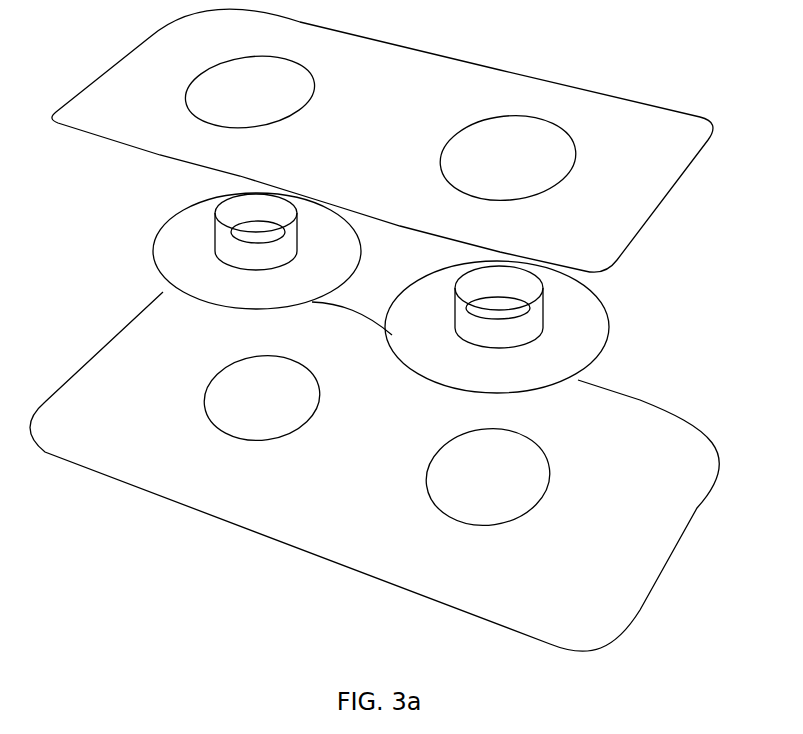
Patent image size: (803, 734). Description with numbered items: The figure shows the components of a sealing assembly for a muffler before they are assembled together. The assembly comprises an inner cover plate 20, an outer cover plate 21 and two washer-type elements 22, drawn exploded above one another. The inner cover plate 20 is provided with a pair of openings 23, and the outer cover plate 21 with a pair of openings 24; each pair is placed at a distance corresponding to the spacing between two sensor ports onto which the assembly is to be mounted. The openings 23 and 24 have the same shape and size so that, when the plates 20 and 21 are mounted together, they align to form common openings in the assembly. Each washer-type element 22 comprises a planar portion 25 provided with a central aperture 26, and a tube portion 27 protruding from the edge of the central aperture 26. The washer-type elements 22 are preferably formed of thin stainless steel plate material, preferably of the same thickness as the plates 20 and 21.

The inner cover plate 20 is at (92, 107).
The outer cover plate 21 is at (83, 405).
The washer-type element 22 is at (408, 300).
The opening 23 is at (259, 105).
The opening 24 is at (272, 407).
The planar portion 25 is at (180, 263).
The central aperture 26 is at (257, 232).
The tube portion 27 is at (240, 255).